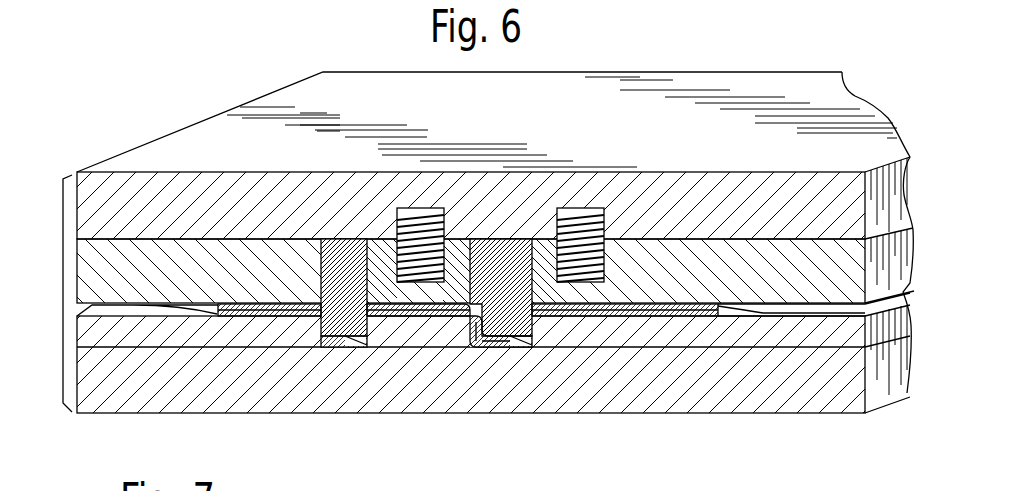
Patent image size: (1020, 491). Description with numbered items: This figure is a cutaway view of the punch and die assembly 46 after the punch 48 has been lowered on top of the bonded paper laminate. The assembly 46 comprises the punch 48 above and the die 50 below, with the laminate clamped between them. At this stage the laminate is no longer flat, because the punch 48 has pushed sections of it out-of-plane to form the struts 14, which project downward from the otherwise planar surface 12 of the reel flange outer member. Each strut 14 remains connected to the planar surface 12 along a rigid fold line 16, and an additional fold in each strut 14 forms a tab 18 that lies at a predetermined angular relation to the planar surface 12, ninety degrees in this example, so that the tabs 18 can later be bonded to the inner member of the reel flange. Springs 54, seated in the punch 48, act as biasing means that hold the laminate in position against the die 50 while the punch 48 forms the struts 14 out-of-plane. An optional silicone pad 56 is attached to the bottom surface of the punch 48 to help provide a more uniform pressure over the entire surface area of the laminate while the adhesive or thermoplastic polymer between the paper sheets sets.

The planar surface 12 is at (287, 313).
The strut 14 is at (463, 345).
The rigid fold line 16 is at (452, 332).
The tab 18 is at (500, 345).
The punch and die assembly 46 is at (63, 296).
The punch 48 is at (632, 130).
The die 50 is at (796, 390).
The spring 54 is at (583, 217).
The silicone pad 56 is at (388, 303).